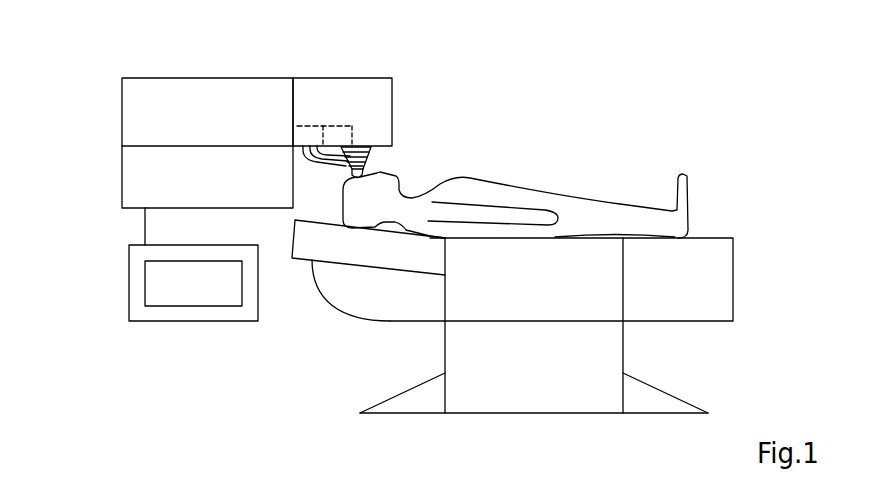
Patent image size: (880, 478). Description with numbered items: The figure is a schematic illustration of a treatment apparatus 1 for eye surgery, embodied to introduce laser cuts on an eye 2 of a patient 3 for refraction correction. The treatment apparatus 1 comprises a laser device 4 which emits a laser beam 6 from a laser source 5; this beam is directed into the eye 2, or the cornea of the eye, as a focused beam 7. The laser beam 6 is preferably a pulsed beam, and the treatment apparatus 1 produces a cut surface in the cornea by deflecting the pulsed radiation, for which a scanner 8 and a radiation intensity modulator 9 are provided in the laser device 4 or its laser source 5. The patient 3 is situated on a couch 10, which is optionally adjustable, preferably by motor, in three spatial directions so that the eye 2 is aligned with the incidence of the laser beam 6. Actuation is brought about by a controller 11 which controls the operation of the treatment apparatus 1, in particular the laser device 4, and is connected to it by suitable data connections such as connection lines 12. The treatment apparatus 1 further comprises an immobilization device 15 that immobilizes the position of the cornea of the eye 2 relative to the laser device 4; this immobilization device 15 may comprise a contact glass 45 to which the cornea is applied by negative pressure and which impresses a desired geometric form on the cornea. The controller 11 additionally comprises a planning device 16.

The treatment apparatus 1 is at (622, 93).
The eye 2 is at (358, 178).
The patient 3 is at (692, 210).
The laser device 4 is at (145, 90).
The laser source 5 is at (333, 83).
The laser beam 6 is at (372, 150).
The focused beam 7 is at (366, 157).
The scanner 8 is at (352, 124).
The radiation intensity modulator 9 is at (310, 124).
The couch 10 is at (727, 260).
The controller 11 is at (170, 317).
The connection lines 12 is at (142, 225).
The immobilization device 15 is at (335, 162).
The planning device 16 is at (155, 290).
The contact glass 45 is at (362, 170).